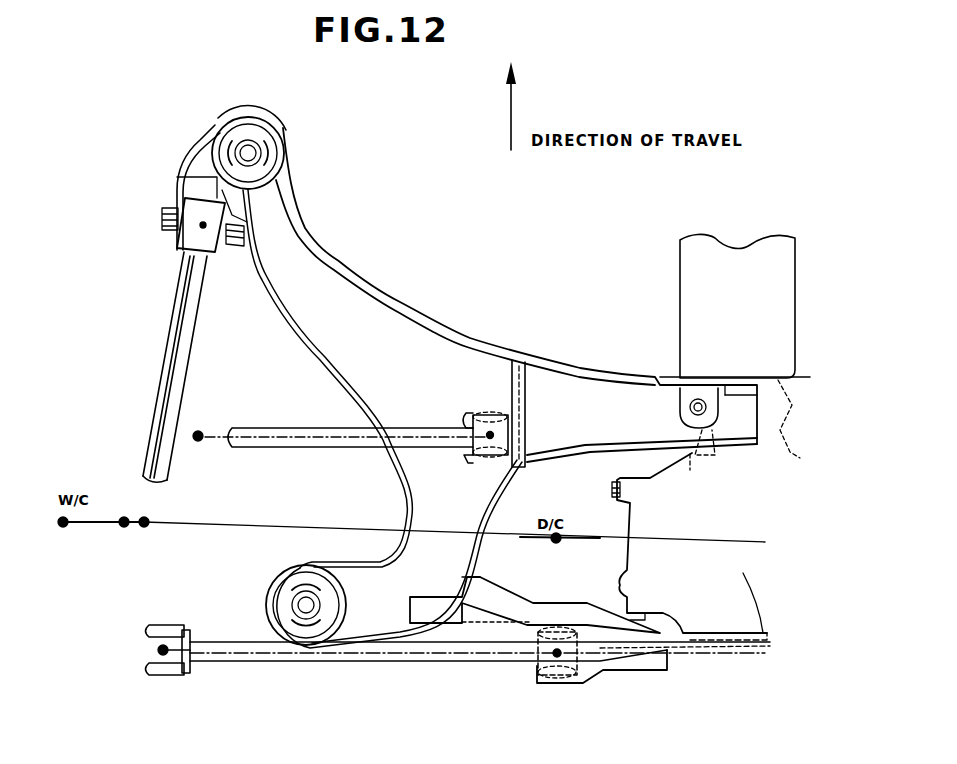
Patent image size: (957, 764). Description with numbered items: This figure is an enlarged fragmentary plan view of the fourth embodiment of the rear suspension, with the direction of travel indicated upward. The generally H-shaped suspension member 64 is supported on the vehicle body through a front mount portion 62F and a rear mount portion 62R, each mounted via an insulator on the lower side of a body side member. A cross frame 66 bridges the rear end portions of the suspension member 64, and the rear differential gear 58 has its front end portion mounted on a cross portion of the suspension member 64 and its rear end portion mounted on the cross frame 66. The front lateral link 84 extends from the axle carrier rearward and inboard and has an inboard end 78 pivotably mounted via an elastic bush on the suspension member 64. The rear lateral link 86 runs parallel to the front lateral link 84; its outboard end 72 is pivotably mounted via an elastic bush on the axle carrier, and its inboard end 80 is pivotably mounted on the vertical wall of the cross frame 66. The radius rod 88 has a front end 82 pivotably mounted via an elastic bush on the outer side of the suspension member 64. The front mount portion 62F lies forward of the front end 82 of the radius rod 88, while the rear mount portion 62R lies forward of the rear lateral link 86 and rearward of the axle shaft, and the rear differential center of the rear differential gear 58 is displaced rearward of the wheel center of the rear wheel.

The rear differential gear 58 is at (742, 594).
The front mount portion 62F is at (260, 134).
The rear mount portion 62R is at (323, 625).
The suspension member 64 is at (412, 300).
The cross frame 66 is at (497, 614).
The outboard end 72 is at (171, 676).
The inboard end 78 is at (492, 414).
The inboard end 80 is at (557, 676).
The front end 82 is at (190, 208).
The front lateral link 84 is at (262, 427).
The rear lateral link 86 is at (250, 662).
The radius rod 88 is at (176, 338).